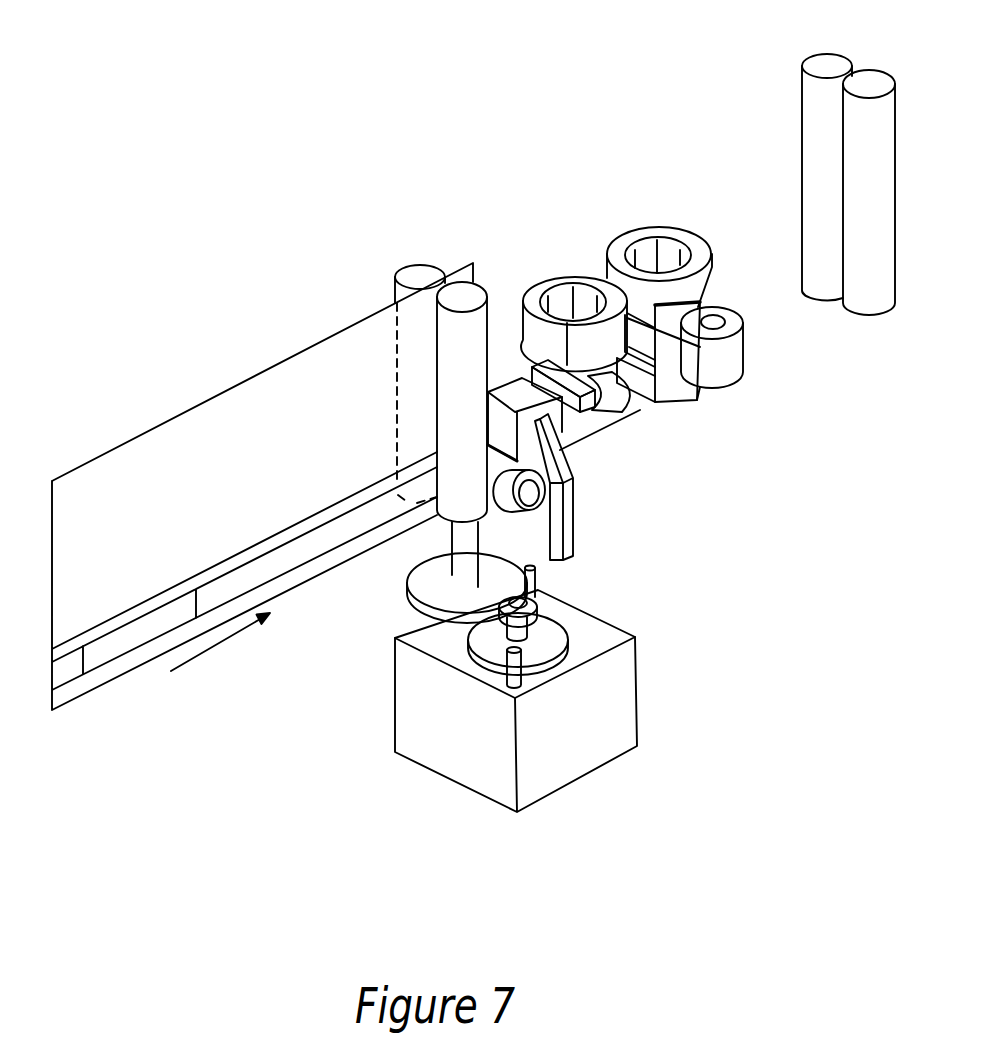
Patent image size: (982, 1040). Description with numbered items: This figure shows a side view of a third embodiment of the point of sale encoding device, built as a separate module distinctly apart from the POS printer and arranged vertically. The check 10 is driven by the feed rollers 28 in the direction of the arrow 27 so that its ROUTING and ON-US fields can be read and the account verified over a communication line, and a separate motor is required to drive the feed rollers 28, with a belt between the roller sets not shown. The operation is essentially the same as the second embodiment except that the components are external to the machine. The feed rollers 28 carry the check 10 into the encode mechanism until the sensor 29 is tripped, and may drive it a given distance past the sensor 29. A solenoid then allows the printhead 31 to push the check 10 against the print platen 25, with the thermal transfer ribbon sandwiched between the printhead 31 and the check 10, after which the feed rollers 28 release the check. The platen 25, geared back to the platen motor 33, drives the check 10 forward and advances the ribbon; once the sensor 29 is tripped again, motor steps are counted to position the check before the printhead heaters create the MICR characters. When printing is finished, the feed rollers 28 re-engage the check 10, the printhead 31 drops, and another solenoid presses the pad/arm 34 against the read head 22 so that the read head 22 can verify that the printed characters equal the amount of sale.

The check 10 is at (199, 406).
The read head 22 is at (513, 390).
The print platen 25 is at (730, 373).
The arrow 27 is at (203, 655).
The feed rollers 28 is at (418, 272).
The sensor 29 is at (590, 398).
The printhead 31 is at (683, 402).
The platen motor 33 is at (447, 777).
The pad/arm 34 is at (567, 525).